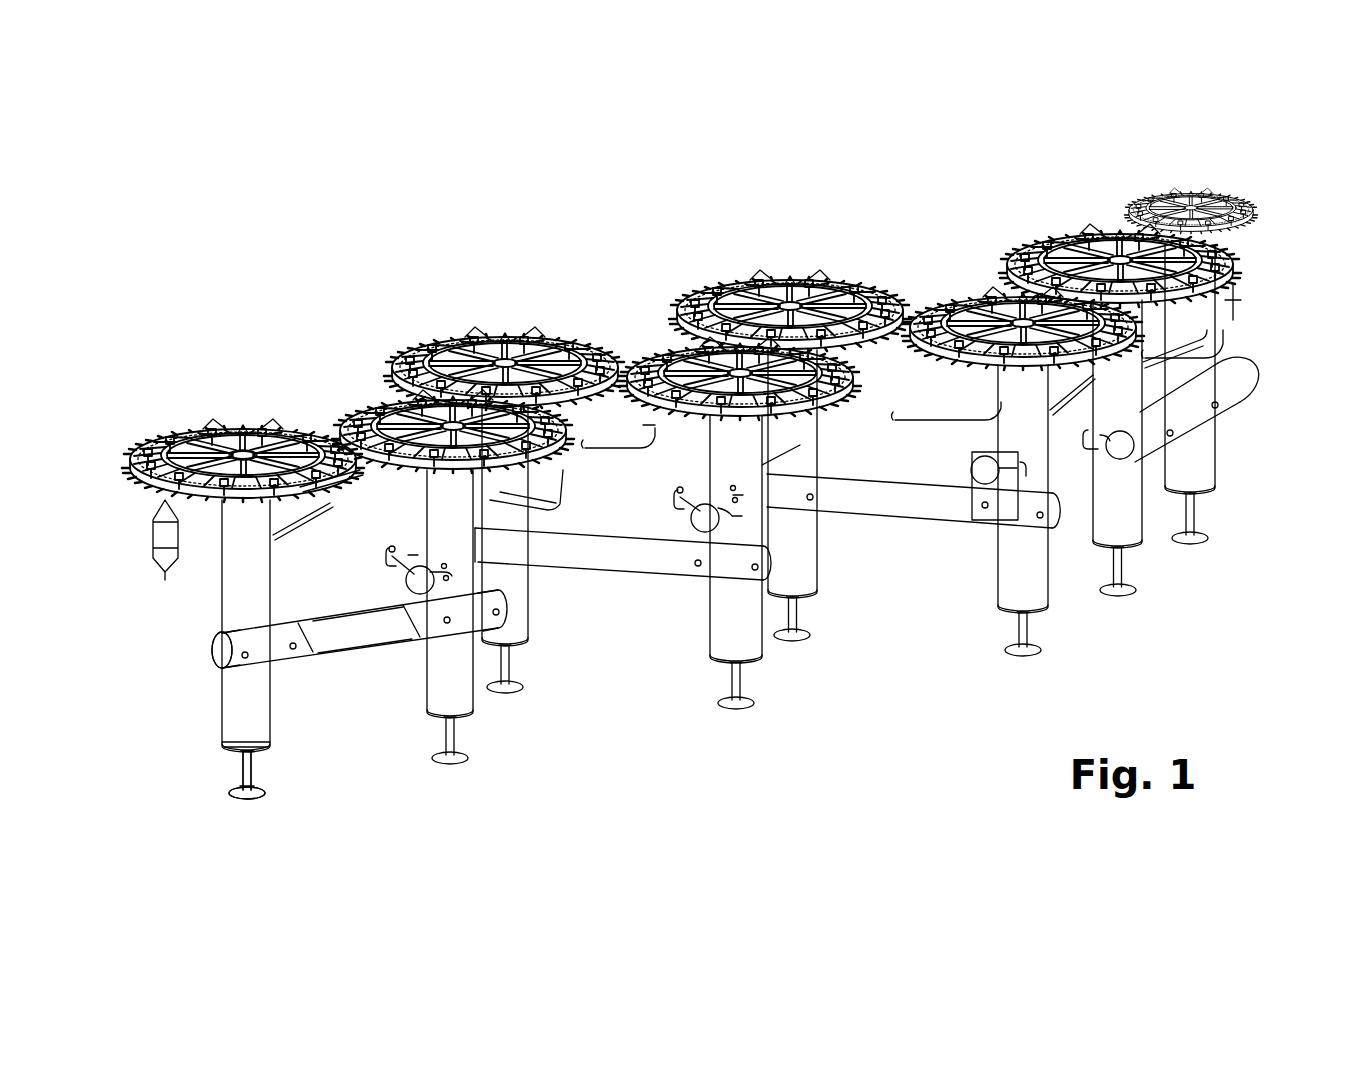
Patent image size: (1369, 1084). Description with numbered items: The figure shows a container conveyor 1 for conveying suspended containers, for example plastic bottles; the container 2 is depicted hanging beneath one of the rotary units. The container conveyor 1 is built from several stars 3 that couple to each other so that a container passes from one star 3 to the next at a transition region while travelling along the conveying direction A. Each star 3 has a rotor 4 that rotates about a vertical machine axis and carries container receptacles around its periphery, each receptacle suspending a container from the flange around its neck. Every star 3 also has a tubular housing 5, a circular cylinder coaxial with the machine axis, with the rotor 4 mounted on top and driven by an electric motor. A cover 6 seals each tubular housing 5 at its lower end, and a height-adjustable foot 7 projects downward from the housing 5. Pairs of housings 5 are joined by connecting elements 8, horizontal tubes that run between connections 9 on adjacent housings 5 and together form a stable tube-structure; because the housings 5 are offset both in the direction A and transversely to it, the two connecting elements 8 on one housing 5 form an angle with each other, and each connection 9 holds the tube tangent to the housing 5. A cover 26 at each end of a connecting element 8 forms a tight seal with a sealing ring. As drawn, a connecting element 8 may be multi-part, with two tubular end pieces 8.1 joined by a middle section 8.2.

The container conveyor 1 is at (332, 262).
The container 2 is at (162, 543).
The star 3 is at (470, 312).
The rotor 4 is at (227, 438).
The tubular housing 5 is at (1192, 389).
The cover 6 is at (268, 744).
The height-adjustable foot 7 is at (247, 777).
The connecting element 8 is at (855, 492).
The tubular end piece 8.1 is at (472, 610).
The middle section 8.2 is at (362, 623).
The connection 9 is at (682, 490).
The cover 26 is at (212, 646).
The conveying direction A is at (930, 178).